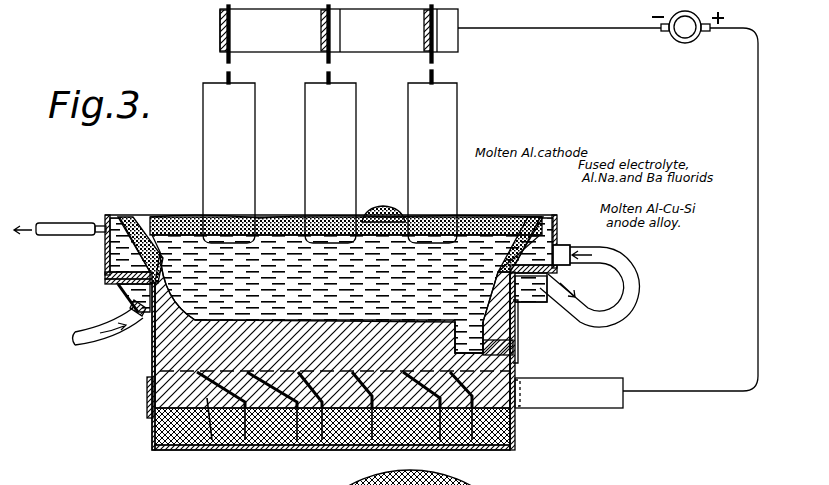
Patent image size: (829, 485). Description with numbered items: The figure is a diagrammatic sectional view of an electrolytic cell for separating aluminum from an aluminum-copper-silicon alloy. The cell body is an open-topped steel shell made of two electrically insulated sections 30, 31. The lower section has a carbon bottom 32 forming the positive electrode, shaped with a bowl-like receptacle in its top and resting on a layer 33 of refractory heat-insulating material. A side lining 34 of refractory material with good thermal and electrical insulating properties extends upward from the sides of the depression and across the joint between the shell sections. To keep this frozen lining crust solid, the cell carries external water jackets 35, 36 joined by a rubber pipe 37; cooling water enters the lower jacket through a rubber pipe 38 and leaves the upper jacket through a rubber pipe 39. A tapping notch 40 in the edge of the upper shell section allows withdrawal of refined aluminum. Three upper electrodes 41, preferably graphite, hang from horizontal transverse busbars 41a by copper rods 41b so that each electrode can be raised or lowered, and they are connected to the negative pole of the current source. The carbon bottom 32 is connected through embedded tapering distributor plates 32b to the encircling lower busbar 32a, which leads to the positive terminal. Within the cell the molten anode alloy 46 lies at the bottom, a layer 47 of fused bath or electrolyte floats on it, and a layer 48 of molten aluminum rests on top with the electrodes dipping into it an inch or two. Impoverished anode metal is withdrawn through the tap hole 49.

The shell section 30 is at (157, 321).
The shell section 31 is at (107, 262).
The carbon bottom 32 is at (335, 374).
The lower busbar 32a is at (148, 398).
The distributor plates 32b is at (208, 442).
The refractory heat-insulating layer 33 is at (153, 427).
The side lining 34 is at (125, 227).
The lower water jacket 35 is at (124, 296).
The upper water jacket 36 is at (115, 251).
The rubber pipe 37 is at (630, 296).
The rubber pipe 38 is at (88, 336).
The rubber pipe 39 is at (62, 223).
The tapping notch 40 is at (388, 210).
The upper electrodes 41 is at (222, 40).
The busbars 41a is at (323, 42).
The copper rods 41b is at (436, 75).
The anode alloy 46 is at (508, 222).
The fused bath 47 is at (477, 297).
The molten aluminum layer 48 is at (462, 297).
The tap hole 49 is at (455, 340).